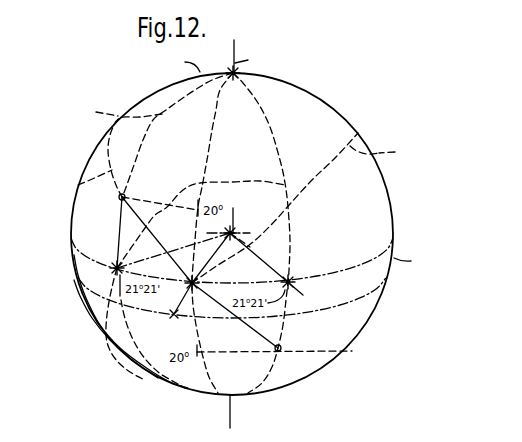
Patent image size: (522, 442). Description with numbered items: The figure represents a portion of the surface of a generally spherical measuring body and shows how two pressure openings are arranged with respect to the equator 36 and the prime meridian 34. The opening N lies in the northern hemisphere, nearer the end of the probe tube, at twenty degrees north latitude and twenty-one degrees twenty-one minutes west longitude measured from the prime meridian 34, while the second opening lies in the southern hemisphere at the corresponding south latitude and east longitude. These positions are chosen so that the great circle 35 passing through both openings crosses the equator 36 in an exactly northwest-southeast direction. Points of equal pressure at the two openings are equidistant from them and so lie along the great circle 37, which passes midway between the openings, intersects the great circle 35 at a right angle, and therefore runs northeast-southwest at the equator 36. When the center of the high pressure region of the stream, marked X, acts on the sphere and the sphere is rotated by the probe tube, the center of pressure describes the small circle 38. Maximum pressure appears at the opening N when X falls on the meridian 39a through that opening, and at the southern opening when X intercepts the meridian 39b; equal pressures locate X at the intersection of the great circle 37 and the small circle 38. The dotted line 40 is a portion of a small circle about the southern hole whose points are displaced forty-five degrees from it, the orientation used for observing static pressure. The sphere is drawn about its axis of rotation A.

The prime meridian 34 is at (213, 128).
The great circle 35 is at (78, 184).
The equator 36 is at (368, 263).
The great circle 37 is at (321, 184).
The small circle 38 is at (368, 293).
The meridian 39a is at (158, 127).
The meridian 39b is at (273, 130).
The small circle 40 is at (200, 185).
The axis of rotation A is at (235, 50).
The opening N is at (119, 197).